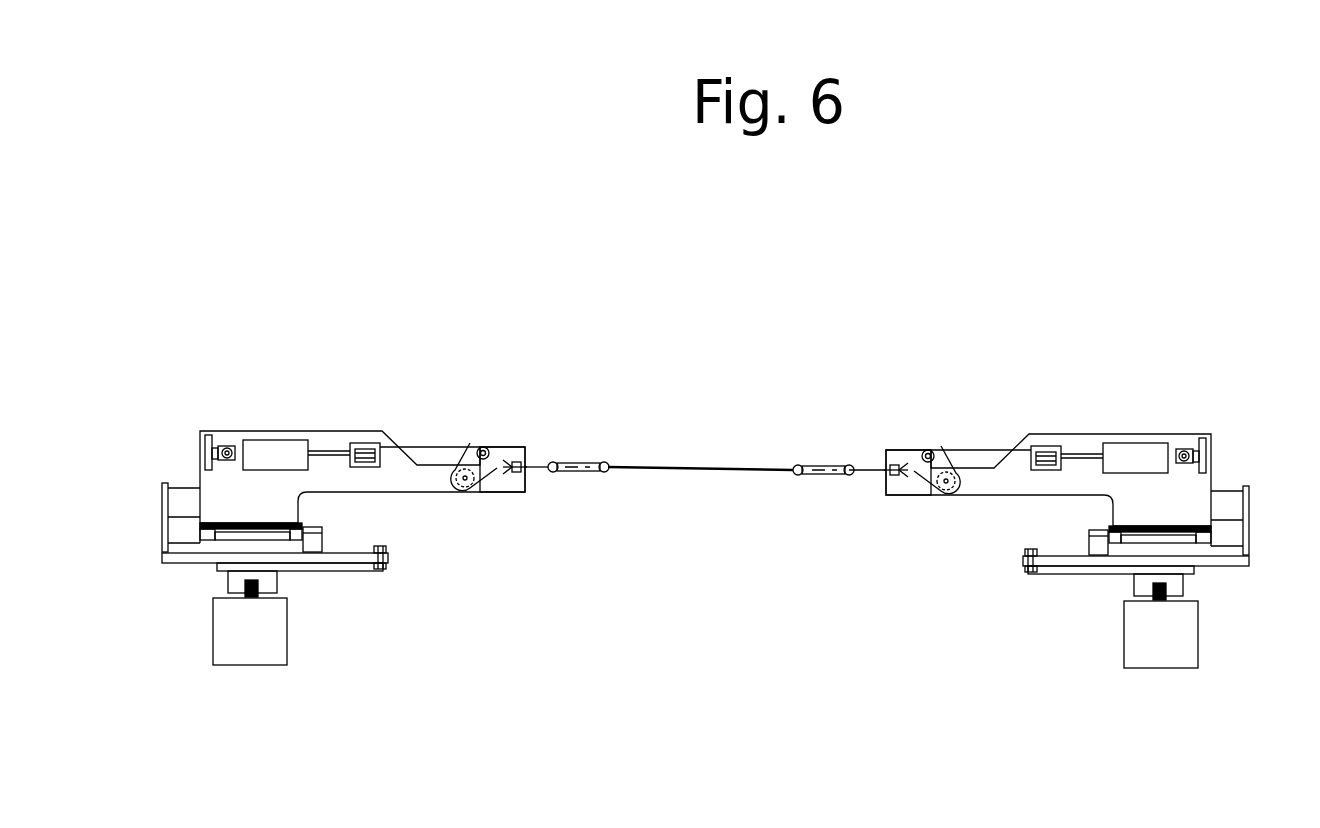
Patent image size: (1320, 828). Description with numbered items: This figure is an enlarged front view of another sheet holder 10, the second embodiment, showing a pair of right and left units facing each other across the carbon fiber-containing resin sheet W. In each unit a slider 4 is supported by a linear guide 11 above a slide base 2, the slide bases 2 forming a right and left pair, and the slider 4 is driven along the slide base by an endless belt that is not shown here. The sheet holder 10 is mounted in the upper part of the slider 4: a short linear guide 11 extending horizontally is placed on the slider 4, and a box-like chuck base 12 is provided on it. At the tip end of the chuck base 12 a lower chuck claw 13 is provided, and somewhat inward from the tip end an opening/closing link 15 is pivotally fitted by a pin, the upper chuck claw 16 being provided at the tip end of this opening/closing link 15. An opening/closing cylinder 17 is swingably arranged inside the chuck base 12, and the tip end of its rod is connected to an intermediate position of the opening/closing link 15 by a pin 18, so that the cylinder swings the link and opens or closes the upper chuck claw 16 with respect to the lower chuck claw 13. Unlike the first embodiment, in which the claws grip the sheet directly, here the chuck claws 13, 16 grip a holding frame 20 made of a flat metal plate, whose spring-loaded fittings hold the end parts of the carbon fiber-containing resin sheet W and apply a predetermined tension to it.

The slide base 2 is at (272, 633).
The slider 4 is at (347, 558).
The sheet holder 10 is at (699, 458).
The linear guide 11 is at (185, 547).
The chuck base 12 is at (323, 437).
The lower chuck claw 13 is at (517, 432).
The opening/closing link 15 is at (500, 447).
The upper chuck claw 16 is at (517, 447).
The opening/closing cylinder 17 is at (270, 452).
The pin 18 is at (485, 445).
The holding frame 20 is at (578, 462).
The carbon fiber-containing resin sheet W is at (703, 467).